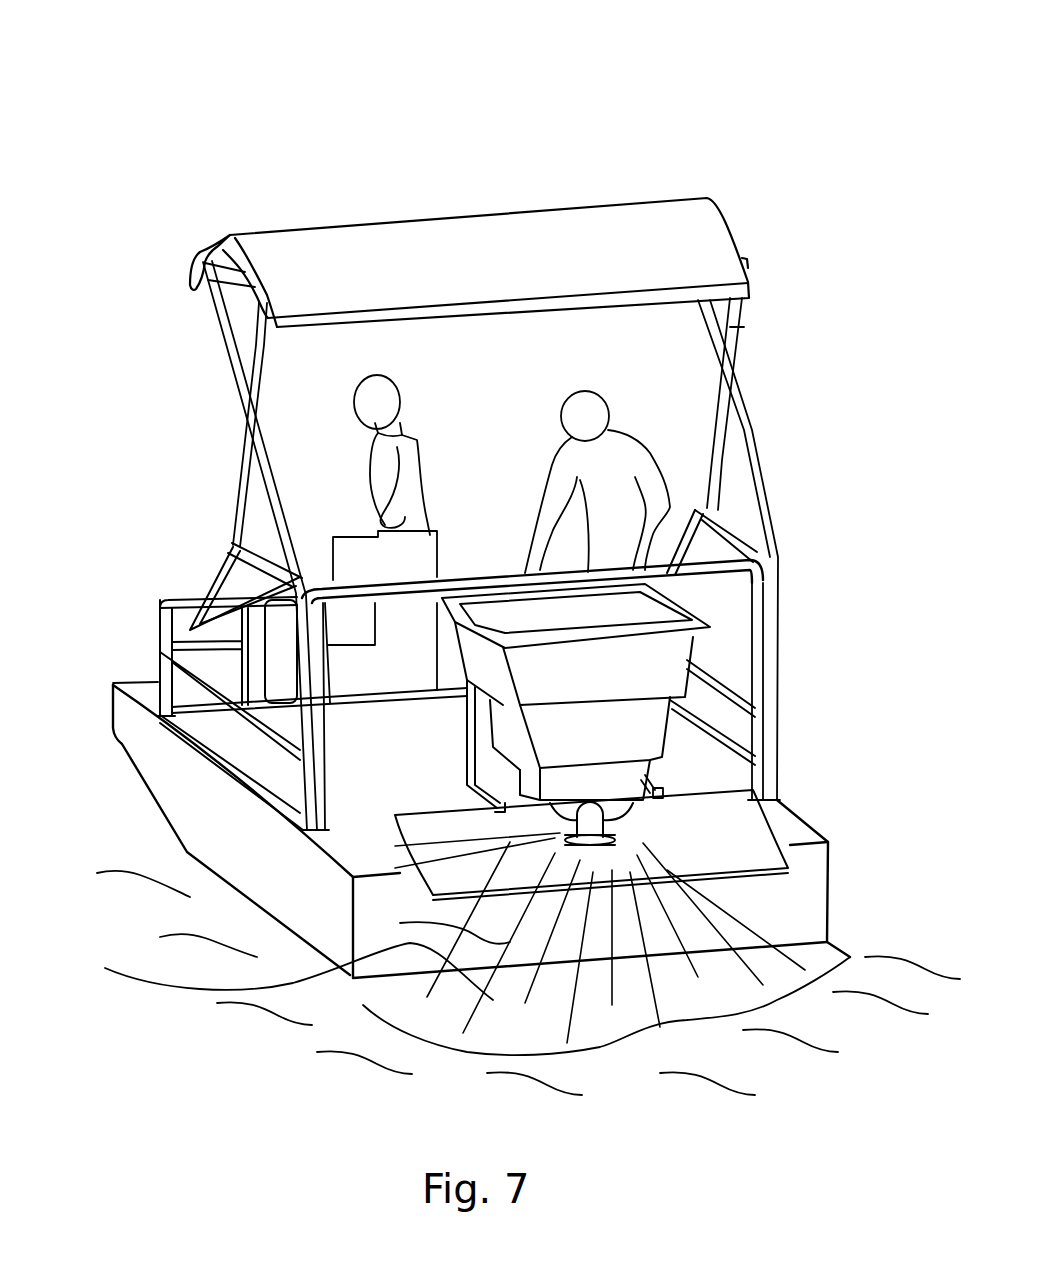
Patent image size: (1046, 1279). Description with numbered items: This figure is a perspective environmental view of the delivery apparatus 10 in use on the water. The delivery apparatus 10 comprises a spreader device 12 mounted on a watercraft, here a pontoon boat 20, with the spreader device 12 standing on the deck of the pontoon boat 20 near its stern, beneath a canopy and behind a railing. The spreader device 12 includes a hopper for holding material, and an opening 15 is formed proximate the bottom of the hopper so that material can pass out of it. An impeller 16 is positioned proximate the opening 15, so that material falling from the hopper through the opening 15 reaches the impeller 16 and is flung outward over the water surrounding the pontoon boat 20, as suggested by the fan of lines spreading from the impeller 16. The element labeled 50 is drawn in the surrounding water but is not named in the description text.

The delivery apparatus 10 is at (384, 124).
The spreader device 12 is at (690, 603).
The opening 15 is at (668, 787).
The impeller 16 is at (360, 858).
The pontoon boat 20 is at (140, 695).
The water / spray 50 is at (510, 928).